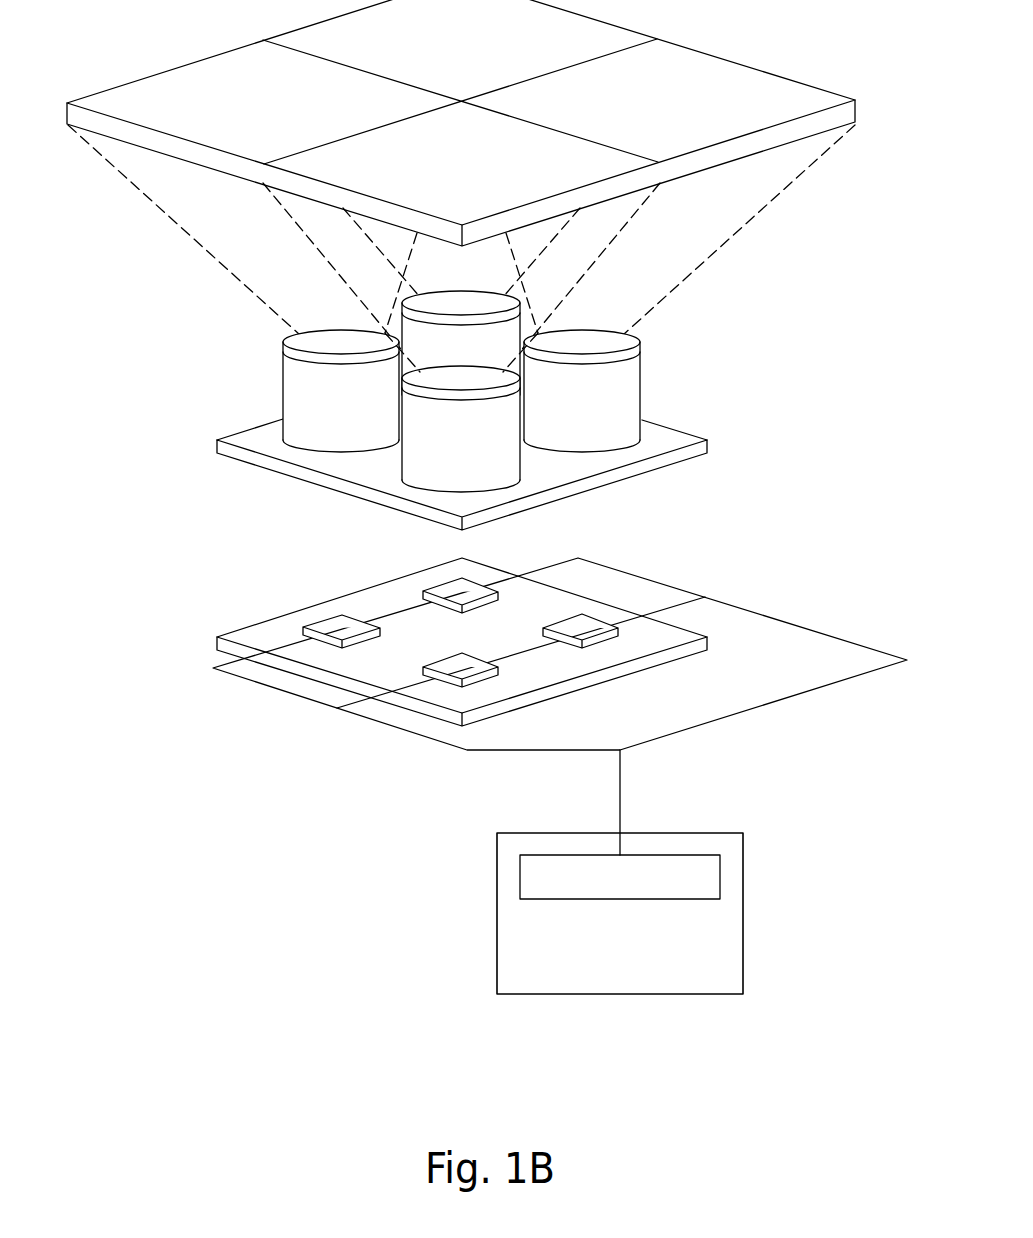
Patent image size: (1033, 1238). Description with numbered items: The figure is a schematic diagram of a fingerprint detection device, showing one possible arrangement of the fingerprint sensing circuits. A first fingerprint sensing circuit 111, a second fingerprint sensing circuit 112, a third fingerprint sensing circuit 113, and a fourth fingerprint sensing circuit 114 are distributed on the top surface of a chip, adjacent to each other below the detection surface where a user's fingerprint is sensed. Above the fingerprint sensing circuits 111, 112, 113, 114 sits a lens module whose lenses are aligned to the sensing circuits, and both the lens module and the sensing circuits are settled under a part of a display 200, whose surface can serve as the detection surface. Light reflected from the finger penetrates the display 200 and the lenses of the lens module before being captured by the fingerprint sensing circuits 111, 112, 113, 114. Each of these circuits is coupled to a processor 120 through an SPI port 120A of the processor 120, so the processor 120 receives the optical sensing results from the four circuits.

The display 200 is at (202, 82).
The first fingerprint sensing circuit 111 is at (338, 625).
The second fingerprint sensing circuit 112 is at (467, 668).
The third fingerprint sensing circuit 113 is at (587, 628).
The fourth fingerprint sensing circuit 114 is at (458, 588).
The processor 120 is at (555, 913).
The SPI port 120A is at (520, 872).